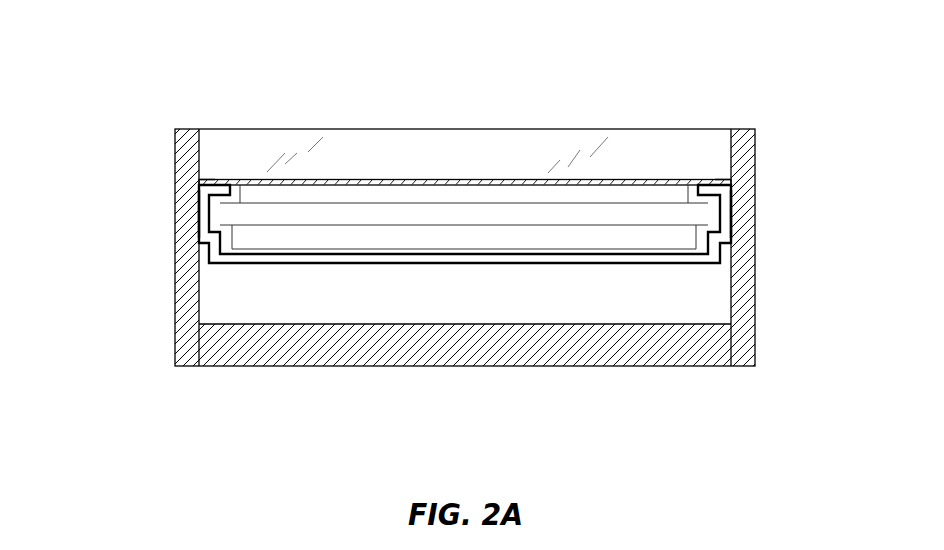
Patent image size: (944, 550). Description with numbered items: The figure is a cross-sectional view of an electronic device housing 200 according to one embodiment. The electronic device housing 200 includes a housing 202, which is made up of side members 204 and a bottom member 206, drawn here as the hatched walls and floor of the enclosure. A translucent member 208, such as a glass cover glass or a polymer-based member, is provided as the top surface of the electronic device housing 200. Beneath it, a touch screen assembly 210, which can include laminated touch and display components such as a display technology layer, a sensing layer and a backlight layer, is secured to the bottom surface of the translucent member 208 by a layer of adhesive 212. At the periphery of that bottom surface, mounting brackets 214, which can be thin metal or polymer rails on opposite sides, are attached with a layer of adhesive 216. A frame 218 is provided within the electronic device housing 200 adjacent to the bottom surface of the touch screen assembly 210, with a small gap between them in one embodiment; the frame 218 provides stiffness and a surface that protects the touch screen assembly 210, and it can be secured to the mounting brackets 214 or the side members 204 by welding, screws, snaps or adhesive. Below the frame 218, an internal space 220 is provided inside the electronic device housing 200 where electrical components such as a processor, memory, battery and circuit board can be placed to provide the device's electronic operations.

The electronic device housing 200 is at (138, 77).
The housing 202 is at (150, 363).
The side members 204 is at (173, 282).
The bottom member 206 is at (357, 367).
The translucent member 208 is at (481, 164).
The touch screen assembly 210 is at (579, 232).
The layer of adhesive 212 is at (518, 183).
The mounting brackets 214 is at (203, 207).
The layer of adhesive 216 is at (197, 183).
The frame 218 is at (335, 258).
The internal space 220 is at (483, 306).